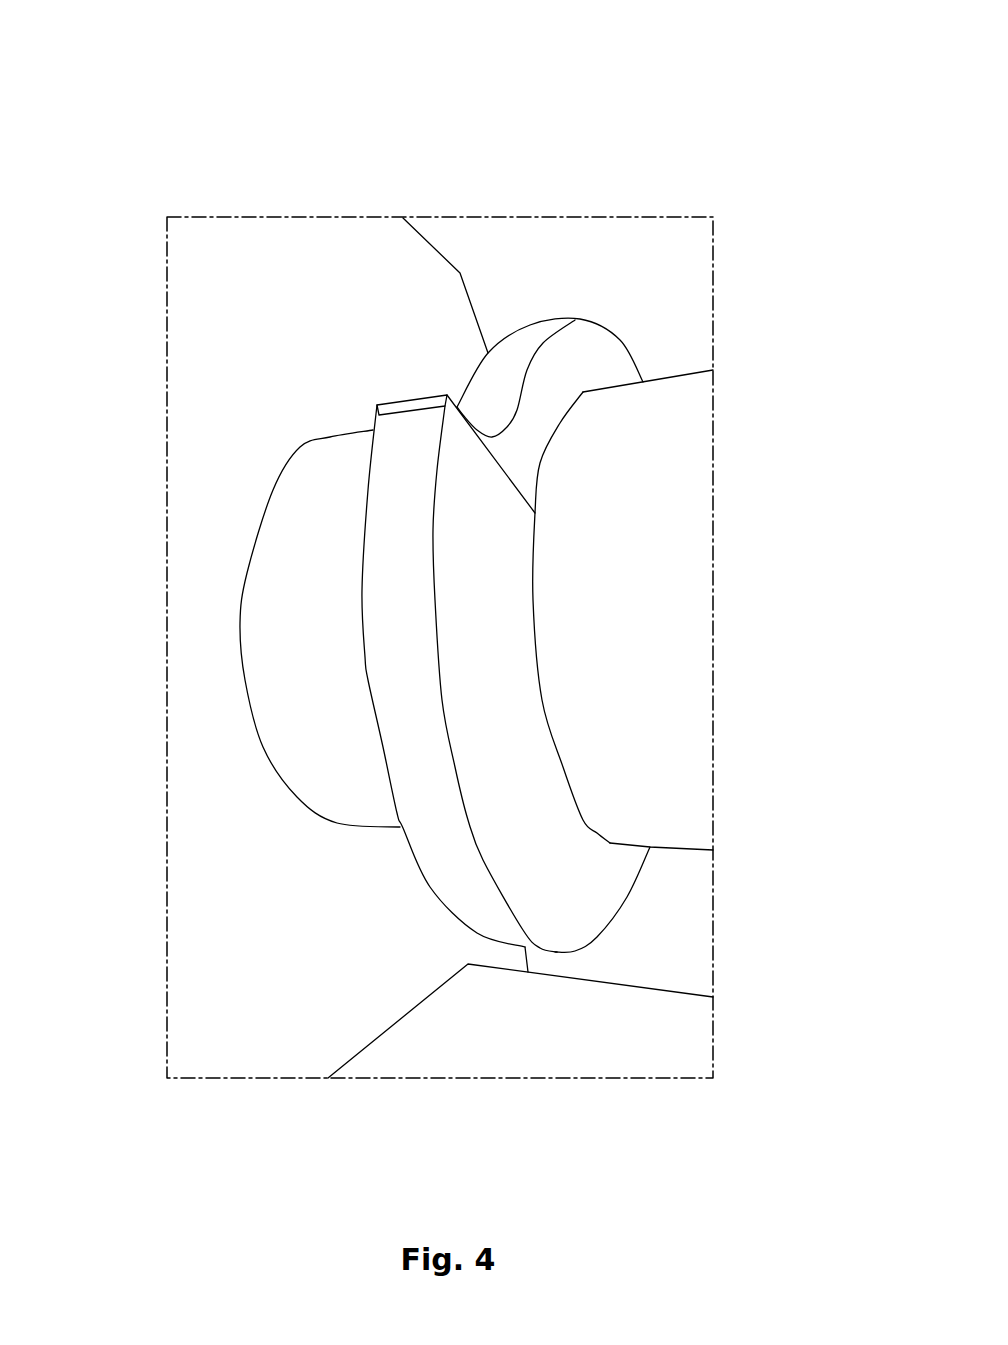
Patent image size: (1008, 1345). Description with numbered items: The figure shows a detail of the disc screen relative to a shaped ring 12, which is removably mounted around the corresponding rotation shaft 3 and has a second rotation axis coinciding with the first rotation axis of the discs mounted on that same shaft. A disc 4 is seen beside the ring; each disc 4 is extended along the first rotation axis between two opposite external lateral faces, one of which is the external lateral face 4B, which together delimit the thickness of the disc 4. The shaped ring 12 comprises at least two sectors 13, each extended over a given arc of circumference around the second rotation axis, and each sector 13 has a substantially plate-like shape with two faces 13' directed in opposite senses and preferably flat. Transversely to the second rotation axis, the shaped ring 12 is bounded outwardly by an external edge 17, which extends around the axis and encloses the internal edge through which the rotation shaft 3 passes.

The disc 4 is at (320, 265).
The external lateral face 4B is at (240, 344).
The shaped ring 12 is at (640, 310).
The rotation shaft 3 is at (687, 482).
The sector 13 is at (659, 552).
The face 13' is at (491, 505).
The external edge 17 is at (408, 680).